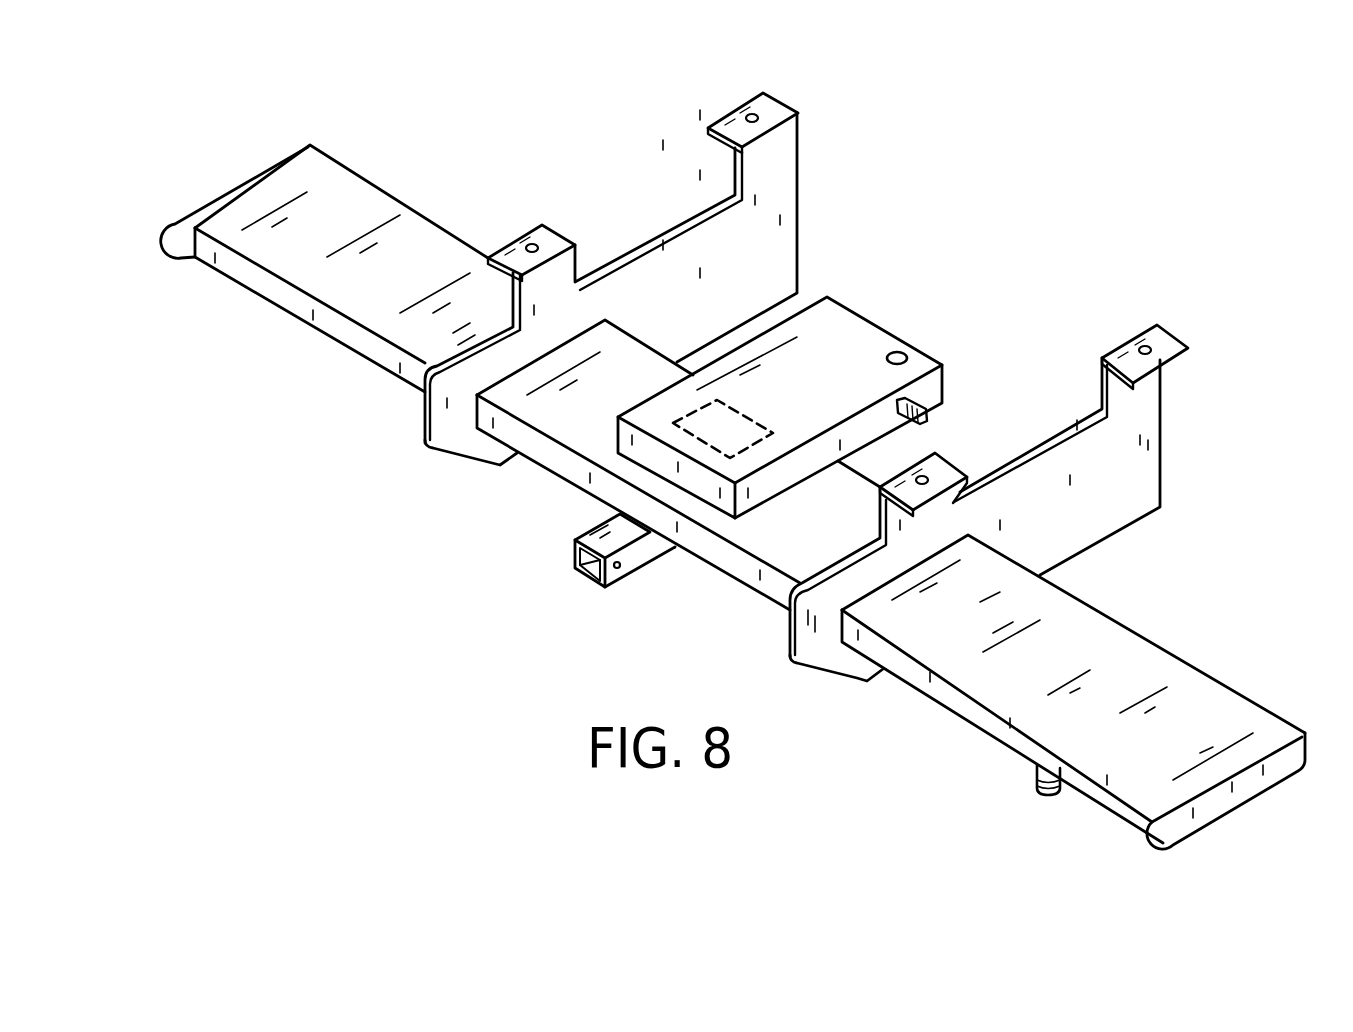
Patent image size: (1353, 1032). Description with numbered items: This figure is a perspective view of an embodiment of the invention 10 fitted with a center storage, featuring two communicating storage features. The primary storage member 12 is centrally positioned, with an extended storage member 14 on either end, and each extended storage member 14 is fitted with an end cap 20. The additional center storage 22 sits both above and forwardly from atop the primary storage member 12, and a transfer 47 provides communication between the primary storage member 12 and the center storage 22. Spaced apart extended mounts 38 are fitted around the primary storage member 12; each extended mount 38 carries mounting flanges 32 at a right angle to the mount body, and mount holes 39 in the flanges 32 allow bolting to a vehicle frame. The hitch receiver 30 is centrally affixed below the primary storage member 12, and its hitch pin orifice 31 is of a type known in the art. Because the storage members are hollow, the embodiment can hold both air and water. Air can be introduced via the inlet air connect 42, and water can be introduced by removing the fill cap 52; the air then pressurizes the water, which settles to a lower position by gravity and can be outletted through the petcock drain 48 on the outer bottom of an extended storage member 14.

The invention 10 is at (1000, 145).
The primary storage member 12 is at (547, 470).
The extended storage member 14 is at (252, 298).
The end cap 20 is at (250, 188).
The center storage 22 is at (893, 343).
The hitch receiver 30 is at (587, 580).
The hitch pin orifice 31 is at (620, 566).
The mounting flange 32 is at (1165, 340).
The extended mount 38 is at (660, 240).
The mount hole 39 is at (532, 246).
The air connect 42 is at (945, 370).
The transfer 47 is at (713, 448).
The petcock drain 48 is at (1037, 797).
The fill cap 52 is at (905, 352).